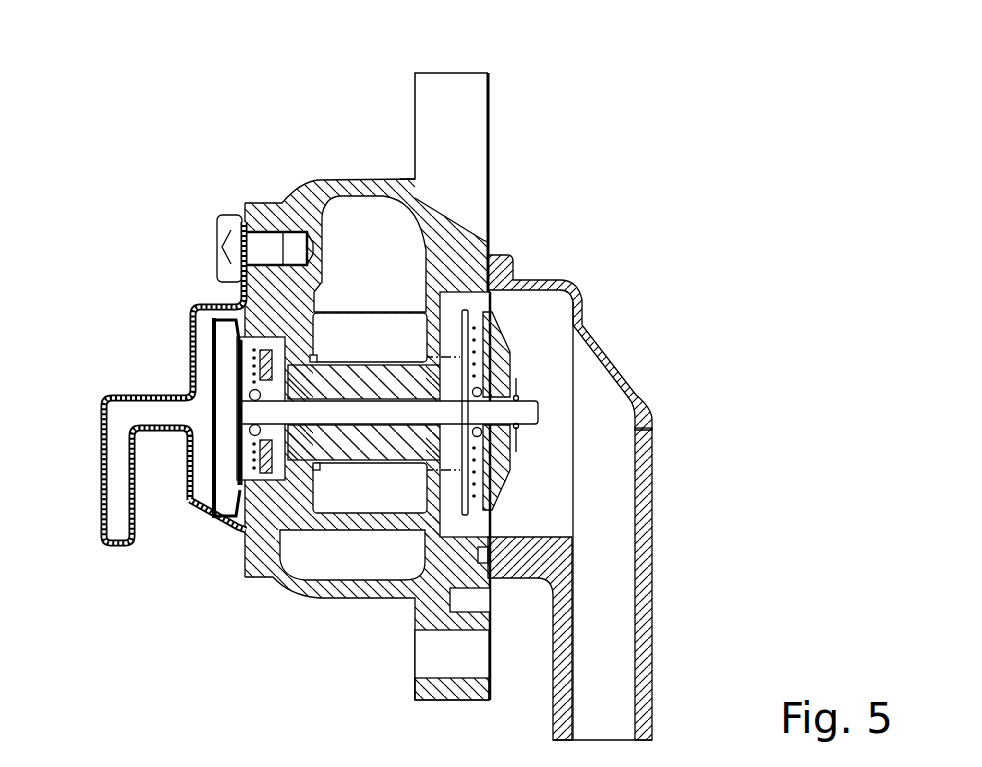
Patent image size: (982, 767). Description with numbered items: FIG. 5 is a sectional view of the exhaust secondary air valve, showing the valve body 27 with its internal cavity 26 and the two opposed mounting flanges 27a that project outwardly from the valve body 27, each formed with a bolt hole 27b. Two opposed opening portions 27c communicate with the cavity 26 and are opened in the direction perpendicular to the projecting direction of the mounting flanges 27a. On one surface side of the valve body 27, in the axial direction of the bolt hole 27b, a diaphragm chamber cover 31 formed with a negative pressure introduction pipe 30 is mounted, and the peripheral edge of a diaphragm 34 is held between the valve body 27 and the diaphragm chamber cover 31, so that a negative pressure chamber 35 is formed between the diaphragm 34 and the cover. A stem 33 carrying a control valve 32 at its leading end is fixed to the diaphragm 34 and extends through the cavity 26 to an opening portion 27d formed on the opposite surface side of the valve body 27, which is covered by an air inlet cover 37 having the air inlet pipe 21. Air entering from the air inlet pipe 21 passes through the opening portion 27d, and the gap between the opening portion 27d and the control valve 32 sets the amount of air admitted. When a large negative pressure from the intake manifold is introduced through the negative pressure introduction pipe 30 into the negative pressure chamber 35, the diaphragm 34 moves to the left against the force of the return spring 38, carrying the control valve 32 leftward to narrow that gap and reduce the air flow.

The air inlet pipe 21 is at (648, 683).
The cavity 26 is at (383, 272).
The valve body 27 is at (307, 192).
The mounting flange 27a is at (457, 88).
The bolt hole 27b is at (480, 672).
The opening portion 27c is at (375, 512).
The opening portion 27d is at (432, 340).
The negative pressure introduction pipe 30 is at (100, 492).
The diaphragm chamber cover 31 is at (186, 510).
The control valve 32 is at (508, 367).
The stem 33 is at (513, 415).
The diaphragm 34 is at (238, 337).
The negative pressure chamber 35 is at (203, 385).
The air inlet cover 37 is at (566, 272).
The return spring 38 is at (385, 470).